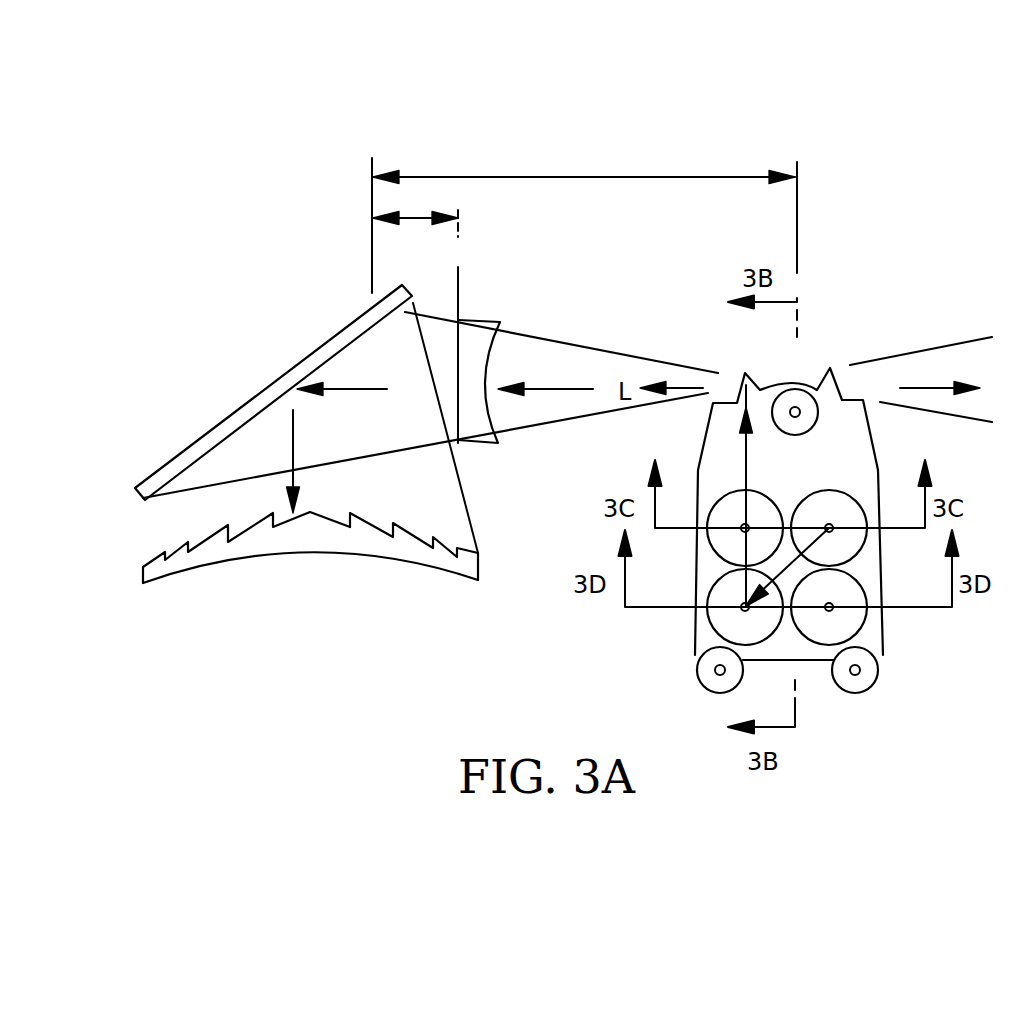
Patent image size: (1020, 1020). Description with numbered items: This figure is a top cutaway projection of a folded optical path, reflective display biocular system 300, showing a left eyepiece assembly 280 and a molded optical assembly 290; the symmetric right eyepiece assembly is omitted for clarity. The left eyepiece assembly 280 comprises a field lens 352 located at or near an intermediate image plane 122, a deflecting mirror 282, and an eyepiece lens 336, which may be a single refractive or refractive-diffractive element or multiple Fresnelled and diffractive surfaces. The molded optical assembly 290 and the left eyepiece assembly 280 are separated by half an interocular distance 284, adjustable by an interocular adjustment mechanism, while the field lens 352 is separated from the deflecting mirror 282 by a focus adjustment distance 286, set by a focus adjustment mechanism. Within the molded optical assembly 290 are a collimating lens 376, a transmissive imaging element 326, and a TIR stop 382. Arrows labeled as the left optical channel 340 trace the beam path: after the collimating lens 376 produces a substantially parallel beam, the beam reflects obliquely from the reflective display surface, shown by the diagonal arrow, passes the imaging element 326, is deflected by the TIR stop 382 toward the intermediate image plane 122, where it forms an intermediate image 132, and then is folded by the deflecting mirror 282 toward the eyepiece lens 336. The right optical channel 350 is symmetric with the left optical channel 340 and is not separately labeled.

The left eyepiece assembly 280 is at (256, 288).
The deflecting mirror 282 is at (165, 462).
The half an interocular distance 284 is at (552, 177).
The focus adjustment distance 286 is at (417, 218).
The intermediate image 132 is at (457, 318).
The intermediate image plane 122 is at (460, 283).
The field lens 352 is at (497, 320).
The left optical channel 340 is at (293, 446).
The eyepiece lens 336 is at (243, 550).
The reflective display biocular system 300 is at (845, 172).
The molded optical assembly 290 is at (858, 290).
The TIR stop 382 is at (750, 377).
The right optical channel 350 is at (913, 387).
The collimating lens 376 is at (833, 497).
The imaging element 326 is at (720, 625).